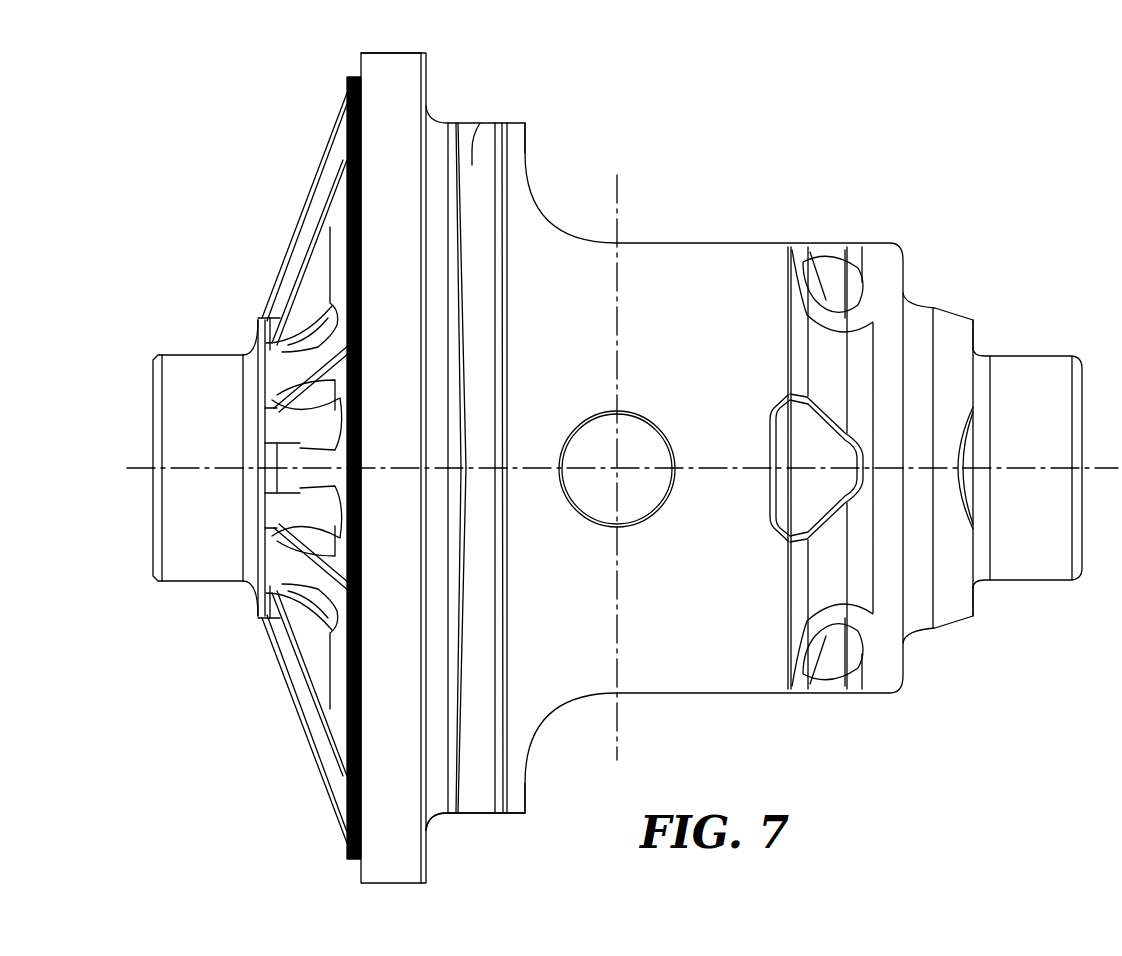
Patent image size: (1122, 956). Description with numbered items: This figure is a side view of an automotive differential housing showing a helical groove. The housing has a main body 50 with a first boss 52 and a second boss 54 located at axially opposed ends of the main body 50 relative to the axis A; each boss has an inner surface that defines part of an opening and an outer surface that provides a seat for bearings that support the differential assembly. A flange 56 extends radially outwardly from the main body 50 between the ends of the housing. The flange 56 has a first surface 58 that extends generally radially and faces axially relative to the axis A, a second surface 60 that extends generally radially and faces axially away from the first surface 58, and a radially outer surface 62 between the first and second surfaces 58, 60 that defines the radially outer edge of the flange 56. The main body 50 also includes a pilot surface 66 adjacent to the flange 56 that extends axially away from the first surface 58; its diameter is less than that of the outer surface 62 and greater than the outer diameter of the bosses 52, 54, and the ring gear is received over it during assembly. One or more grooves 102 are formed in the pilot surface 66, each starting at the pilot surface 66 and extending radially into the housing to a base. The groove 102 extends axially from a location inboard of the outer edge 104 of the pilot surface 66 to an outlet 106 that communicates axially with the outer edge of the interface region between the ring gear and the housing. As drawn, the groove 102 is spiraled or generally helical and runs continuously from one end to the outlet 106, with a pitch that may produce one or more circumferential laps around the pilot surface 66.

The main body 50 is at (733, 268).
The first boss 52 is at (195, 372).
The second boss 54 is at (1050, 370).
The flange 56 is at (397, 96).
The first surface 58 is at (425, 92).
The second surface 60 is at (347, 76).
The radially outer surface 62 is at (388, 53).
The pilot surface 66 is at (472, 147).
The groove 102 is at (492, 132).
The outer edge 104 is at (497, 817).
The outlet 106 is at (492, 163).
The axis A is at (135, 470).